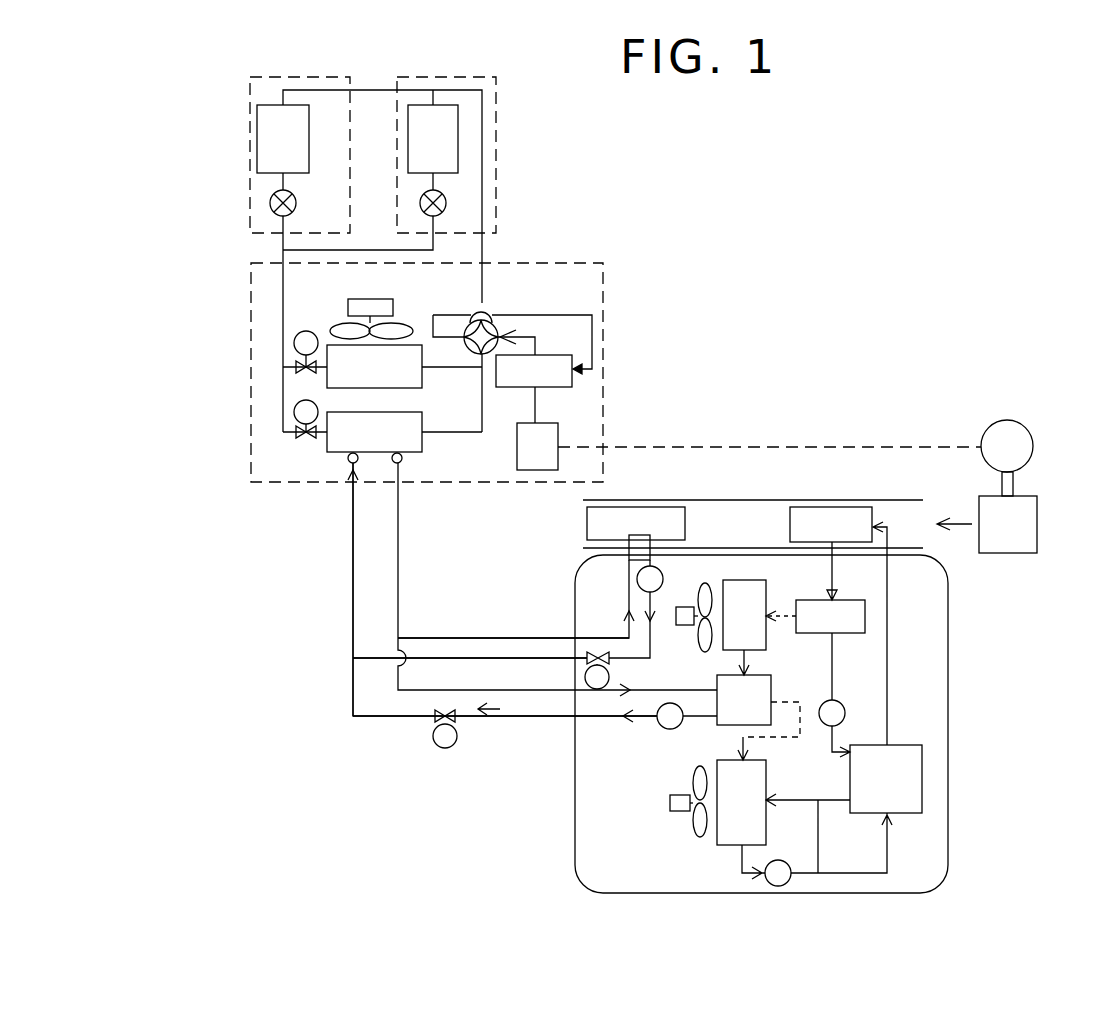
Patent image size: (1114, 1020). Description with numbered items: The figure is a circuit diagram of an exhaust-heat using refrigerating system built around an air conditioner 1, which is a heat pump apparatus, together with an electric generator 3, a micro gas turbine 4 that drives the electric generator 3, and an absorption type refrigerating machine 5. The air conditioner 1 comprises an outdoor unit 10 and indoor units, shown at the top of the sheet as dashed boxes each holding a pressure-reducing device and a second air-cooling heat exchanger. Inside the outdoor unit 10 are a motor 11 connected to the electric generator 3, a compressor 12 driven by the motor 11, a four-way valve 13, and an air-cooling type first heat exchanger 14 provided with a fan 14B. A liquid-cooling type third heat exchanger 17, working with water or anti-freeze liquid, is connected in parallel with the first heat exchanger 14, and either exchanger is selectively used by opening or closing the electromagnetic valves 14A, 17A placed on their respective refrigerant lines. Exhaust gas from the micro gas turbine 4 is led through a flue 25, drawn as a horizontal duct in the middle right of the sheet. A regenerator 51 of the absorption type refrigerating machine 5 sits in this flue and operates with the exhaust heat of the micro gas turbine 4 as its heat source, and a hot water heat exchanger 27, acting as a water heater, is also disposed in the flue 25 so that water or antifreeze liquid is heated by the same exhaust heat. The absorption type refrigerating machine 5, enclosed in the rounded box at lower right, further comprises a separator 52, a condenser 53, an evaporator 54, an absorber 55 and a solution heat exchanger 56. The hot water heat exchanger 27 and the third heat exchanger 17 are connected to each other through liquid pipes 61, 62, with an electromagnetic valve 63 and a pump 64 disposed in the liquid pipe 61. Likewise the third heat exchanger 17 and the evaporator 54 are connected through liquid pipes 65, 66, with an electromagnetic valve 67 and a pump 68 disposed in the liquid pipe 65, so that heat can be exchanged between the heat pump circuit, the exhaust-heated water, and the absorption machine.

The air conditioner 1 is at (205, 193).
The electric generator 3 is at (1007, 420).
The micro gas turbine 4 is at (1037, 535).
The absorption type refrigerating machine 5 is at (950, 868).
The outdoor unit 10 is at (251, 372).
The motor 11 is at (558, 431).
The compressor 12 is at (572, 383).
The four-way valve 13 is at (485, 318).
The air-cooling type heat exchanger 14 is at (326, 382).
The electromagnetic valve 14A is at (294, 340).
The fan 14B is at (345, 322).
The liquid-cooling type heat exchanger 17 is at (318, 445).
The electromagnetic valve 17A is at (294, 410).
The flue 25 is at (738, 500).
The hot water heat exchanger 27 is at (657, 507).
The regenerator 51 is at (835, 507).
The separator 52 is at (843, 600).
The condenser 53 is at (757, 581).
The evaporator 54 is at (766, 677).
The absorber 55 is at (766, 768).
The solution heat exchanger 56 is at (903, 745).
The liquid pipe 61 is at (437, 638).
The liquid pipe 62 is at (487, 658).
The electromagnetic valve 63 is at (597, 651).
The pump 64 is at (637, 580).
The liquid pipe 65 is at (383, 716).
The liquid pipe 66 is at (527, 716).
The electromagnetic valve 67 is at (445, 748).
The pump 68 is at (662, 727).